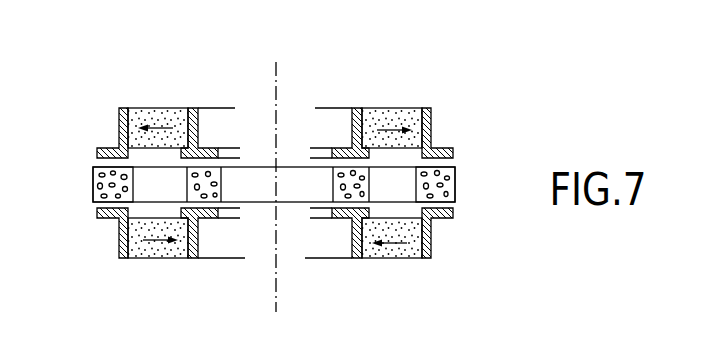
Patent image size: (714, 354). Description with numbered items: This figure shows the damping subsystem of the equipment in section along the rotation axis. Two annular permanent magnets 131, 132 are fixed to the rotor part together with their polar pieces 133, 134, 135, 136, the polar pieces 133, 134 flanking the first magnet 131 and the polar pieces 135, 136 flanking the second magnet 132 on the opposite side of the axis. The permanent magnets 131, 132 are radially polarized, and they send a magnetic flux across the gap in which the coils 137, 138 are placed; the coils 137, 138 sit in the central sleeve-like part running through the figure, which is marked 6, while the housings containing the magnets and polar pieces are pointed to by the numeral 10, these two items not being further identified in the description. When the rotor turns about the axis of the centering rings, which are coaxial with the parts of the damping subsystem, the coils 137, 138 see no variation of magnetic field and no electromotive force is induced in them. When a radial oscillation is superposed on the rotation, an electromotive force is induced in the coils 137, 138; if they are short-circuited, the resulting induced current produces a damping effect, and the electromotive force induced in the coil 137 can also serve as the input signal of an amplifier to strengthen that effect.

The shaft 6 is at (301, 195).
The bearing housing 10 is at (216, 130).
The annular permanent magnet 131 is at (170, 120).
The annular permanent magnet 132 is at (178, 250).
The polar piece 133 is at (120, 127).
The polar piece 134 is at (207, 108).
The polar piece 135 is at (118, 252).
The polar piece 136 is at (199, 250).
The coil 137 is at (93, 183).
The coil 138 is at (455, 190).